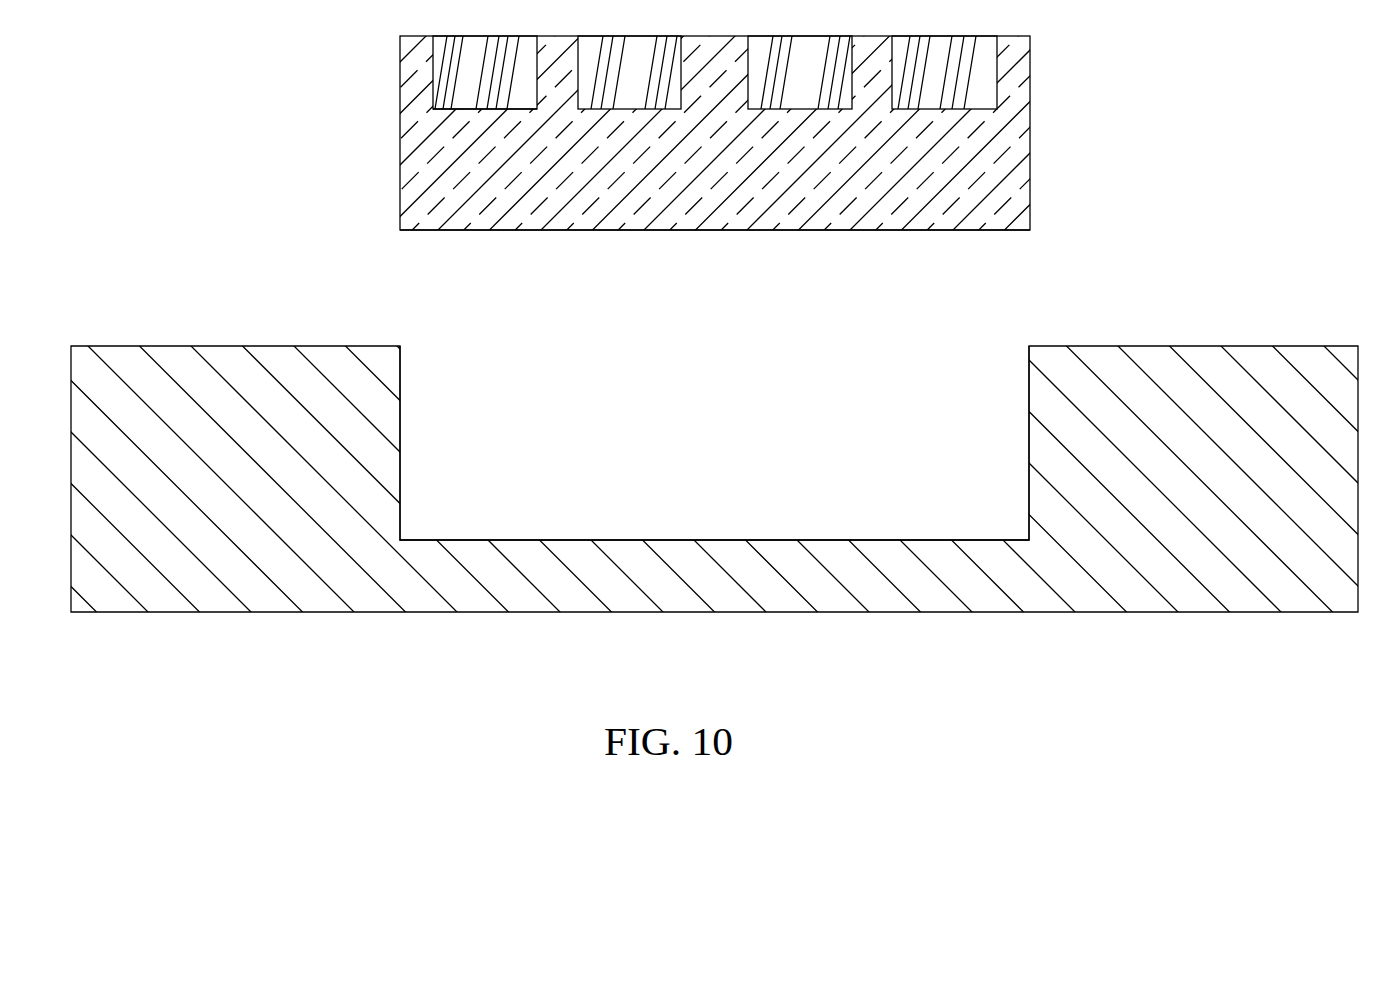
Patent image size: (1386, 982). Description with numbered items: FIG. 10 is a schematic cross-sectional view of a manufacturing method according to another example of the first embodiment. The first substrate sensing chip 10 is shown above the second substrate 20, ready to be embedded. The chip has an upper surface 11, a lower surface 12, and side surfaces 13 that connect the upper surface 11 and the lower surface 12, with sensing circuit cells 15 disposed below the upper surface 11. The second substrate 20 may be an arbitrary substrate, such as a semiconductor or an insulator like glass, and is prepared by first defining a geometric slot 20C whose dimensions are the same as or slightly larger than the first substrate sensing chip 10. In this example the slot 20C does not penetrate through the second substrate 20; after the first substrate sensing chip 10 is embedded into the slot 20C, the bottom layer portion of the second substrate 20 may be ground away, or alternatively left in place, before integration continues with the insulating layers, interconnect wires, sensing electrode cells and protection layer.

The first substrate sensing chip 10 is at (701, 170).
The upper surface 11 is at (872, 36).
The lower surface 12 is at (637, 231).
The side surfaces 13 is at (400, 125).
The sensing circuit cells 15 is at (459, 101).
The second substrate 20 is at (693, 461).
The slot 20C is at (992, 373).